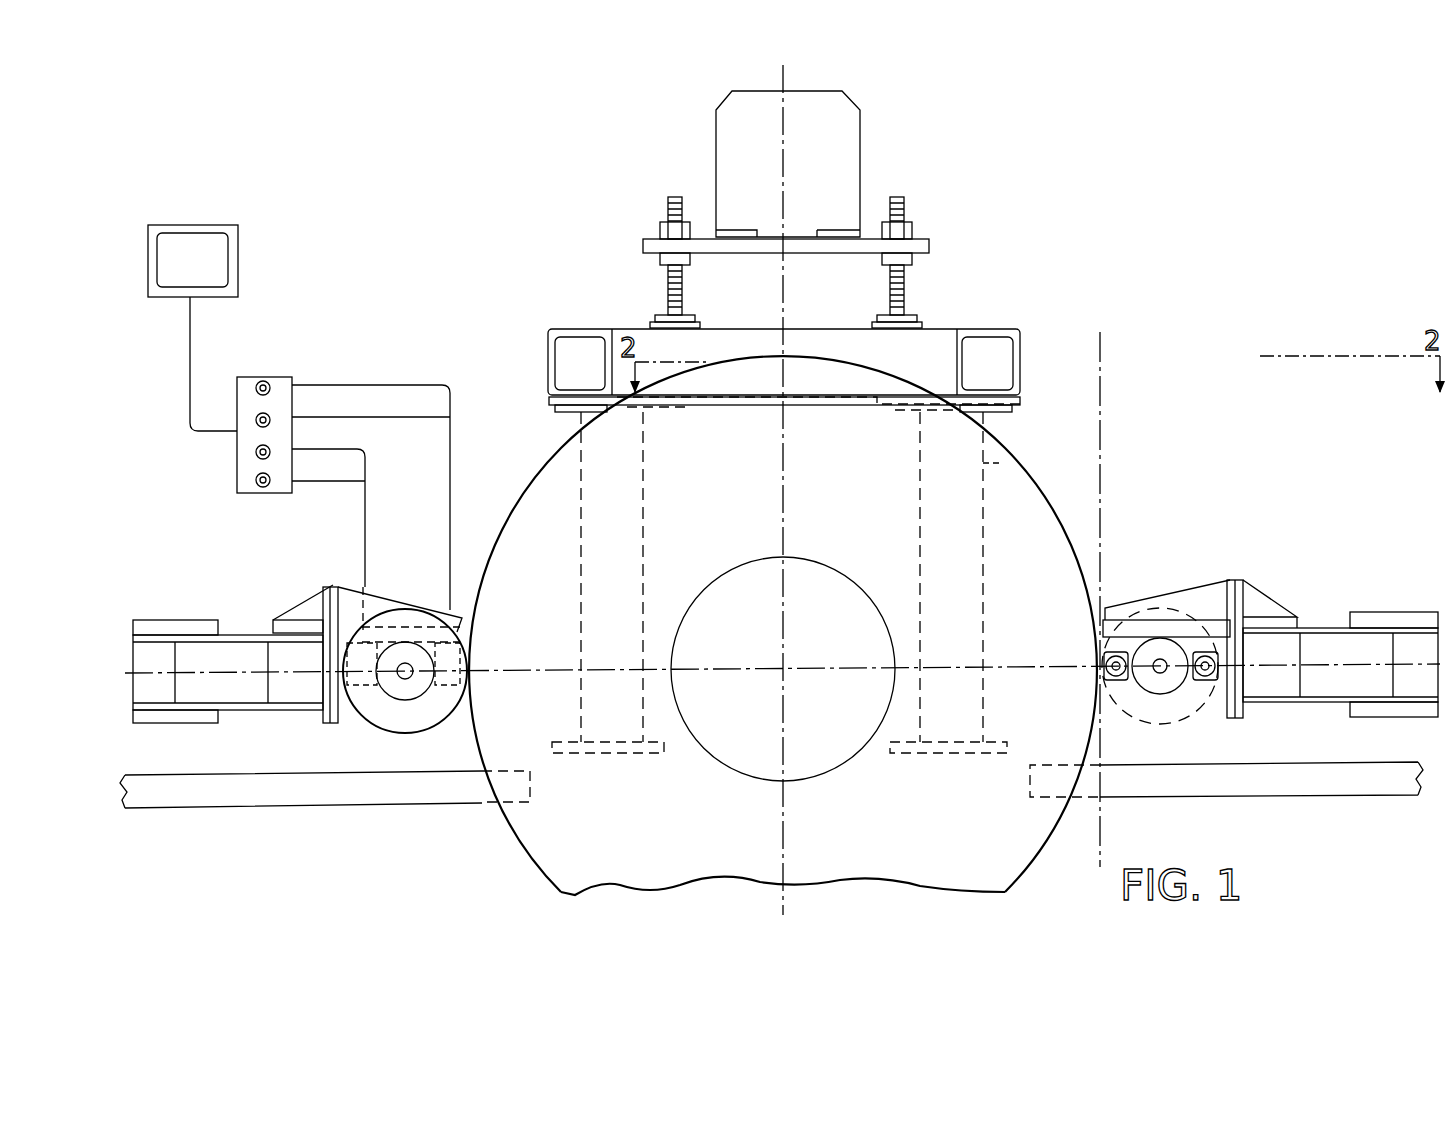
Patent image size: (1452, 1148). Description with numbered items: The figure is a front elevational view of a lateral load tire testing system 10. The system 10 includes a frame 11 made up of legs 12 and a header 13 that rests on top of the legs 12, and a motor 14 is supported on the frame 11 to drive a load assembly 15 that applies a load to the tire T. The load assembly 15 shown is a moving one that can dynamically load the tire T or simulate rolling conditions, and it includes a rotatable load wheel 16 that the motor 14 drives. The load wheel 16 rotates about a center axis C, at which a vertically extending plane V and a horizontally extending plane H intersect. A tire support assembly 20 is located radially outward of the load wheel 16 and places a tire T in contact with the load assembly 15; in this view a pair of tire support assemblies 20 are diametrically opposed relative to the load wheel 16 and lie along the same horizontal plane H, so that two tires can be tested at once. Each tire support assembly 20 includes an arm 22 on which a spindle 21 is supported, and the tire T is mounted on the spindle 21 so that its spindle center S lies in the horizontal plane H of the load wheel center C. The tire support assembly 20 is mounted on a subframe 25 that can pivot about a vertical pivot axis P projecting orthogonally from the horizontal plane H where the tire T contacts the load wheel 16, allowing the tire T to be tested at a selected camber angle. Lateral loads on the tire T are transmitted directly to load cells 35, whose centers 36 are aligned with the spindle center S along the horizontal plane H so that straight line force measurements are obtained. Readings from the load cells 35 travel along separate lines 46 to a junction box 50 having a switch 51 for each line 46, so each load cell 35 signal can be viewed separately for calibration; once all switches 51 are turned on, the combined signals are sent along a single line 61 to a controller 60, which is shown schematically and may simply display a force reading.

The lateral load tire testing system 10 is at (603, 235).
The frame 11 is at (913, 353).
The legs 12 is at (589, 419).
The header 13 is at (753, 340).
The motor 14 is at (845, 150).
The load assembly 15 is at (1072, 519).
The load wheel 16 is at (1023, 493).
The tire support assembly 20 is at (293, 598).
The spindle 21 is at (405, 671).
The arm 22 is at (242, 648).
The subframe 25 is at (297, 812).
The load cell 35 is at (1110, 662).
The centers of first supports 36 is at (1113, 670).
The lines 46 is at (365, 384).
The junction box 50 is at (243, 380).
The switch 51 is at (268, 420).
The controller 60 is at (197, 225).
The single line 61 is at (188, 352).
The vertically extending plane V is at (783, 476).
The horizontally extending plane H is at (821, 667).
The center axis C is at (783, 668).
The vertical pivot axis P is at (1103, 363).
The spindle center S is at (407, 687).
The tire T is at (380, 720).